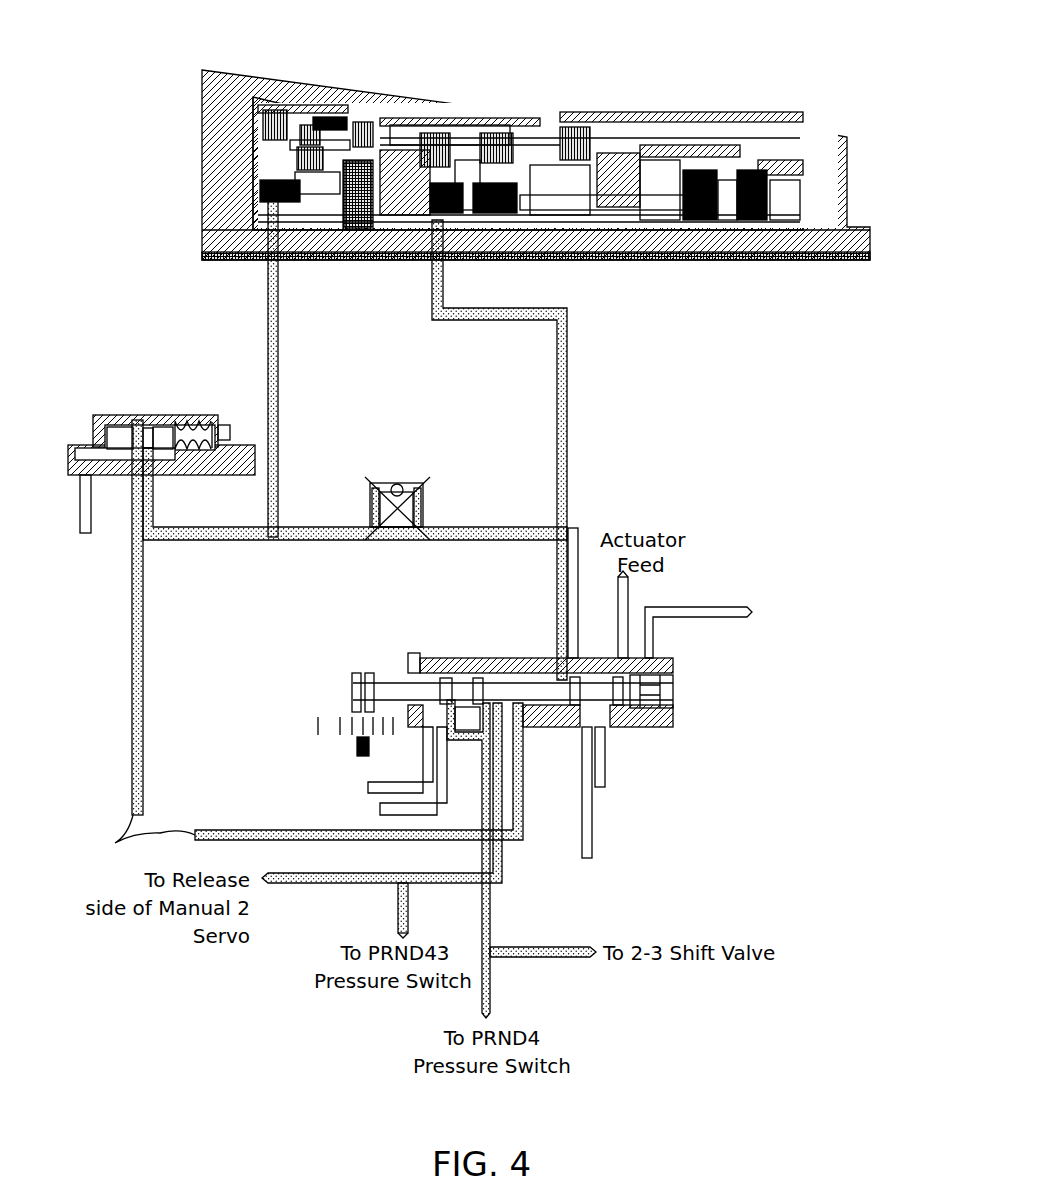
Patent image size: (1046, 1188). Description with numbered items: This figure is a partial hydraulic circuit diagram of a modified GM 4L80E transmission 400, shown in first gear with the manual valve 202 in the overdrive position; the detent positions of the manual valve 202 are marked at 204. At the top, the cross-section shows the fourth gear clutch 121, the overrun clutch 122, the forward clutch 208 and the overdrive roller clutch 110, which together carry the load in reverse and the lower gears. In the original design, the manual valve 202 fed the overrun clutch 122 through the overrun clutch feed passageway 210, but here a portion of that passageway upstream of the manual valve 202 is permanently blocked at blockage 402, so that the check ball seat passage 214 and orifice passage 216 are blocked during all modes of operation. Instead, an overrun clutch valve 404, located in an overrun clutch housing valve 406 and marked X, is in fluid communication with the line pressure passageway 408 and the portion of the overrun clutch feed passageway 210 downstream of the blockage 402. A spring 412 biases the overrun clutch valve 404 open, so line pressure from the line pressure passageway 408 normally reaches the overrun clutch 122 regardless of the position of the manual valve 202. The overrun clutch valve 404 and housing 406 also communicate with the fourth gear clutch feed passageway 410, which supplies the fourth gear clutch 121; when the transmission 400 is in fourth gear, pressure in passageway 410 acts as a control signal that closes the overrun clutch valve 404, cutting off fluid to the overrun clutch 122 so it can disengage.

The modified GM 4L80E transmission 400 is at (589, 46).
The fourth gear clutch 121 is at (272, 108).
The overrun clutch 122 is at (305, 145).
The forward clutch 208 is at (442, 133).
The overdrive roller clutch 110 is at (333, 232).
The overrun clutch valve 404 is at (117, 435).
The overrun clutch housing valve 406 is at (140, 428).
The valve X is at (158, 428).
The spring 412 is at (205, 426).
The fourth gear clutch feed passageway 410 is at (87, 535).
The line pressure passageway 408 is at (294, 781).
The blockage 402 is at (410, 483).
The check ball seat passage 214 is at (393, 483).
The orifice passage 216 is at (397, 538).
The overrun clutch feed passageway 210 is at (578, 530).
The manual valve 202 is at (345, 660).
The detent positions 204 is at (297, 745).